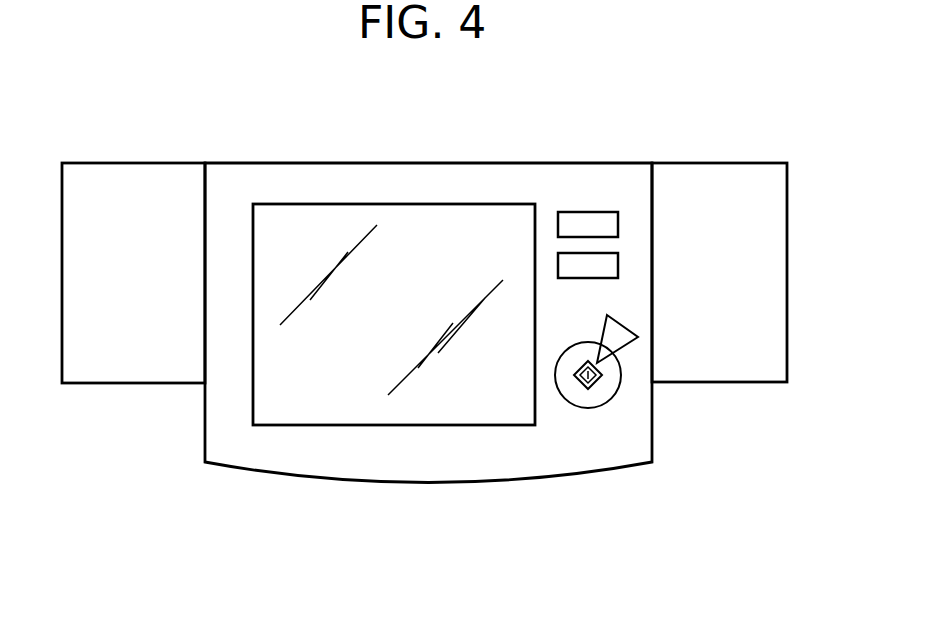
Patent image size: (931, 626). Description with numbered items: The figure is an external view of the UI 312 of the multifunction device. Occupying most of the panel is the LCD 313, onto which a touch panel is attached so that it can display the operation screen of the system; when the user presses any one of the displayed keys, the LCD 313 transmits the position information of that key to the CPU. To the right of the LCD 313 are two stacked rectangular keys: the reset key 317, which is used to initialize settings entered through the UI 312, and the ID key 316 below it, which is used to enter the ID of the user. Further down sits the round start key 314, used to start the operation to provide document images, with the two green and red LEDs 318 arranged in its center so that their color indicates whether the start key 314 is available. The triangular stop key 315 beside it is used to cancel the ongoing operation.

The UI 312 is at (298, 163).
The LCD 313 is at (318, 427).
The start key 314 is at (582, 409).
The stop key 315 is at (626, 338).
The ID key 316 is at (561, 266).
The reset key 317 is at (587, 221).
The LEDs 318 is at (591, 386).